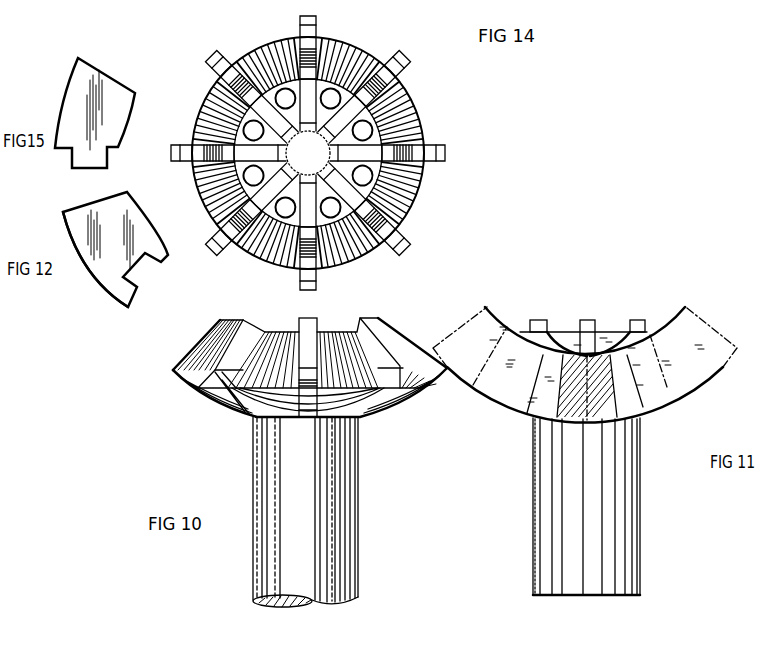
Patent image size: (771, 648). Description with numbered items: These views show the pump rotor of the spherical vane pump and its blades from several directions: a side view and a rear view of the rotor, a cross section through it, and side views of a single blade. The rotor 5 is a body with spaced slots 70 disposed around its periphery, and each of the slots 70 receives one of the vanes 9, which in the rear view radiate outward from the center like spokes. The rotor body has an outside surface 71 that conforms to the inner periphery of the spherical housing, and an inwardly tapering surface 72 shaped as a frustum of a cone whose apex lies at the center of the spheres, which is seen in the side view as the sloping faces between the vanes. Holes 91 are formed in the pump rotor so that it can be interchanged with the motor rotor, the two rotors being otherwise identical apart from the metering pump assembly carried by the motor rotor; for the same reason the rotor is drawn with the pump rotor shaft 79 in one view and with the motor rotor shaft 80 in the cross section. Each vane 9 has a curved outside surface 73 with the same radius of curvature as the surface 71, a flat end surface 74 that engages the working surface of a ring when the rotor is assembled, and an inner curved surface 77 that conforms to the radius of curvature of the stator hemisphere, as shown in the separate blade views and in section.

In FIG. 14, the rotor 5 is at (353, 50).
In FIG. 10, the rotor 5 is at (272, 328).
In FIG. 14, the vanes 9 is at (398, 58).
In FIG. 15, the vanes 9 is at (118, 90).
In FIG. 12, the vanes 9 is at (120, 208).
In FIG. 10, the vanes 9 is at (392, 330).
In FIG. 14, the holes 91 is at (410, 100).
In FIG. 10, the slots 70 is at (405, 402).
In FIG. 10, the outside surface 71 is at (227, 395).
In FIG. 10, the inwardly tapering surface 72 is at (340, 330).
In FIG. 12, the curved outside surface 73 is at (90, 267).
In FIG. 10, the end surface 74 is at (193, 350).
In FIG. 12, the inner curved surface 77 is at (138, 233).
In FIG. 11, the inner curved surface 77 is at (597, 332).
In FIG. 10, the pump rotor shaft 79 is at (362, 537).
In FIG. 11, the motor rotor shaft 80 is at (633, 527).